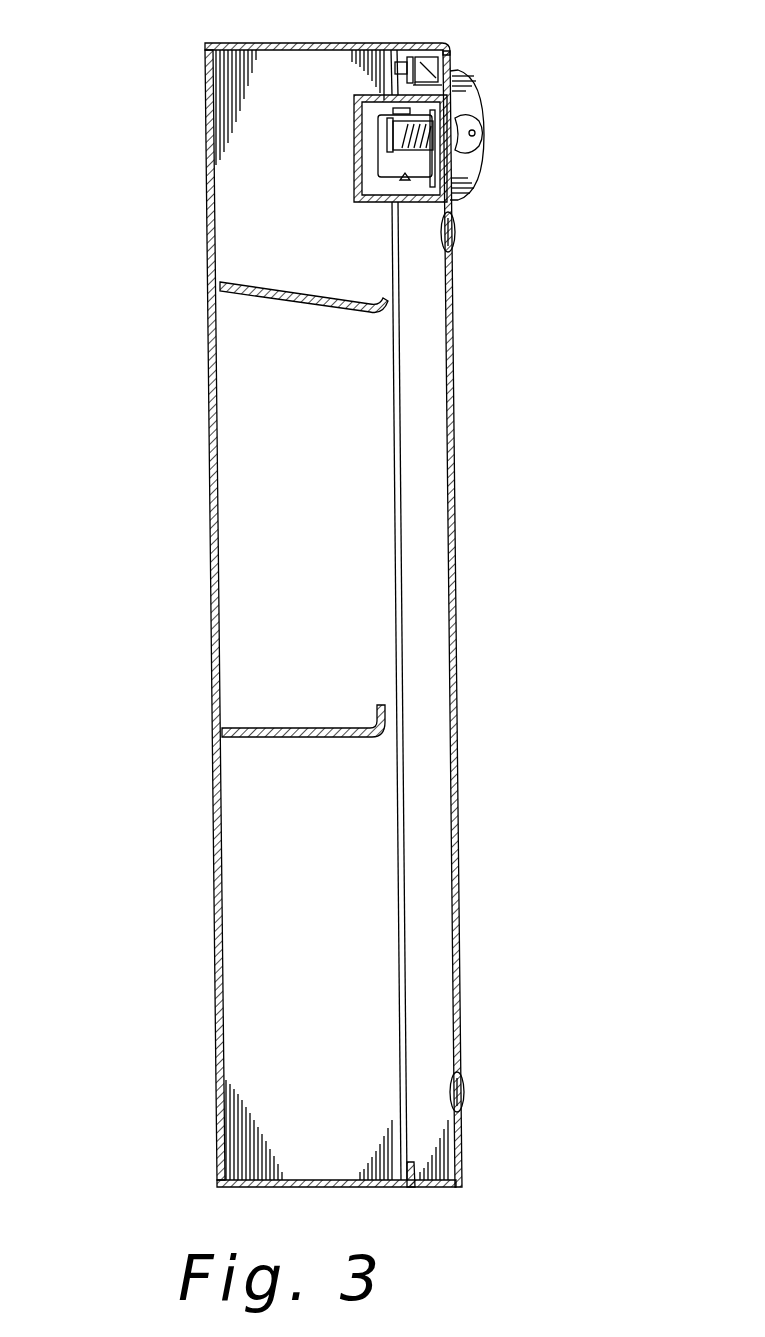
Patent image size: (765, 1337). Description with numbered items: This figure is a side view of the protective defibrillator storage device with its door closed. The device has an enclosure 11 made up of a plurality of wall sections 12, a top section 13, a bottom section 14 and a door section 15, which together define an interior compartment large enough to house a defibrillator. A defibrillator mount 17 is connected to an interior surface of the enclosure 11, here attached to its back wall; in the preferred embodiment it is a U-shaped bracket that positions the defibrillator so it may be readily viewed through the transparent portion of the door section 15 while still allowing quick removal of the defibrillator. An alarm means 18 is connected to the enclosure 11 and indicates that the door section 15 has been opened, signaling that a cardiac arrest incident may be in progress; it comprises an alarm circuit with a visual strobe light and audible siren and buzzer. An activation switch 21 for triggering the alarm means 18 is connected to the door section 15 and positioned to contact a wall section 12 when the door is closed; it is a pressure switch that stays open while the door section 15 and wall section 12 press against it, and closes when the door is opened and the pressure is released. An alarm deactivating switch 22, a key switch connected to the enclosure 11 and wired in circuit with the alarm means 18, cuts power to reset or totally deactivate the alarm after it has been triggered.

The enclosure 11 is at (213, 762).
The wall section 12 is at (206, 168).
The top section 13 is at (240, 45).
The bottom section 14 is at (258, 1185).
The door section 15 is at (454, 482).
The defibrillator mount 17 is at (265, 298).
The alarm means 18 is at (470, 103).
The activation switch 21 is at (450, 49).
The alarm deactivating switch 22 is at (418, 134).